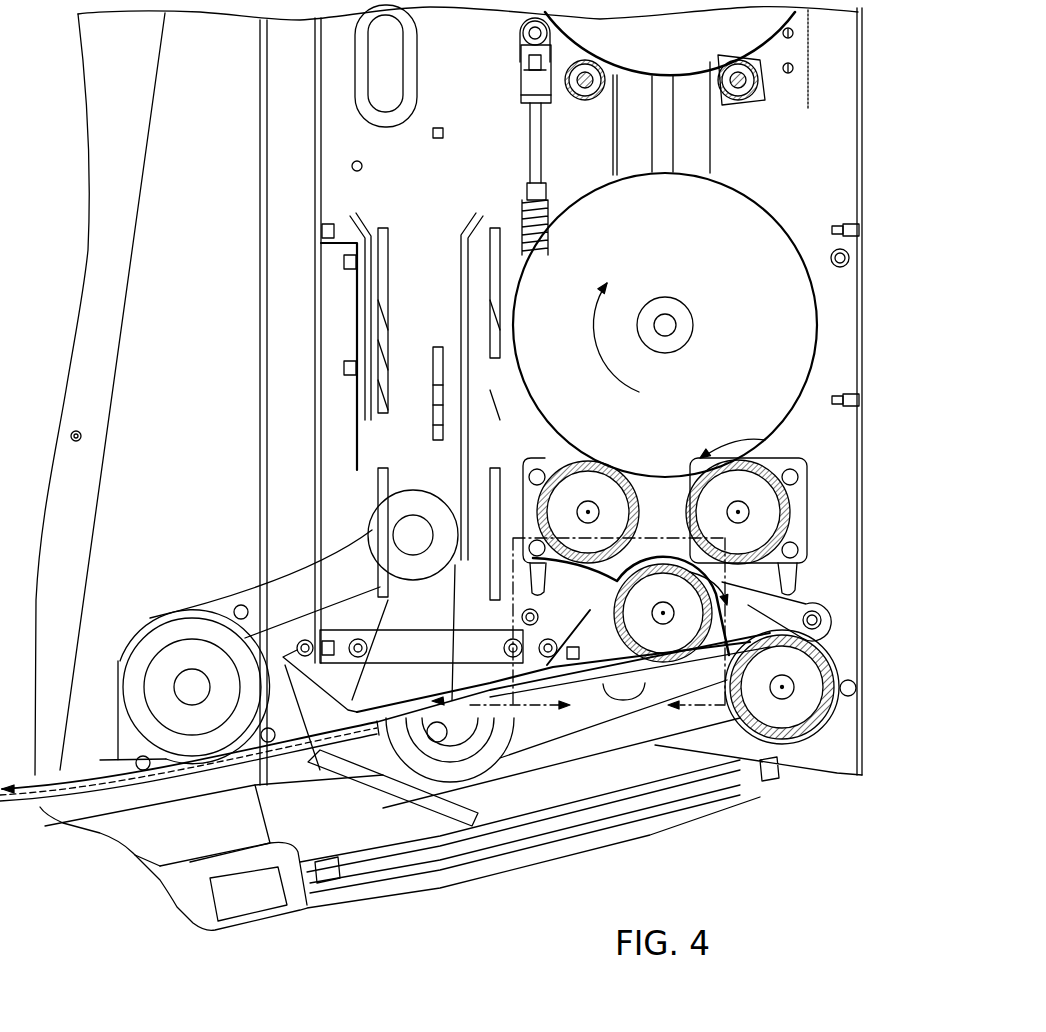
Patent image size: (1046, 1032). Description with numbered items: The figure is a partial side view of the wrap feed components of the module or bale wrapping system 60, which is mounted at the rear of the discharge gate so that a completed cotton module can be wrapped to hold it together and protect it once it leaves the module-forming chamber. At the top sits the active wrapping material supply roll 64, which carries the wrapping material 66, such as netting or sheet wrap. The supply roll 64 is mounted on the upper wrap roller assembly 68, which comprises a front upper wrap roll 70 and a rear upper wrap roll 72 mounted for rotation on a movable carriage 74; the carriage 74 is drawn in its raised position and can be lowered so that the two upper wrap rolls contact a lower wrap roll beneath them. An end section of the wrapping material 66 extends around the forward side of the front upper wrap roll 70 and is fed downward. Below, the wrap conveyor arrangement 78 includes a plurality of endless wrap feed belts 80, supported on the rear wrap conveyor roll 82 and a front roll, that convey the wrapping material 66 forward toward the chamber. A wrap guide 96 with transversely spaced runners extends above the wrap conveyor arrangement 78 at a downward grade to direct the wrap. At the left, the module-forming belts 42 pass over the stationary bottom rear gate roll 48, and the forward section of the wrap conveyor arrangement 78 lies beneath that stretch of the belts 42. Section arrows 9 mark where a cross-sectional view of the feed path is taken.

The wrapping system 60 is at (880, 128).
The belts 42 is at (260, 418).
The wrapping material supply roll 64 is at (738, 190).
The wrapping material 66 is at (820, 342).
The bottom rear gate roll 48 is at (187, 618).
The front upper wrap roll 70 is at (557, 473).
The rear upper wrap roll 72 is at (797, 522).
The movable carriage 74 is at (790, 472).
The upper wrap roller assembly 68 is at (828, 543).
The rear wrap conveyor roll 82 is at (828, 655).
The wrap conveyor arrangement 78 is at (823, 740).
The wrap feed belts 80 is at (362, 822).
The wrap guide 96 is at (548, 667).
The section line for FIG. 9 is at (597, 637).